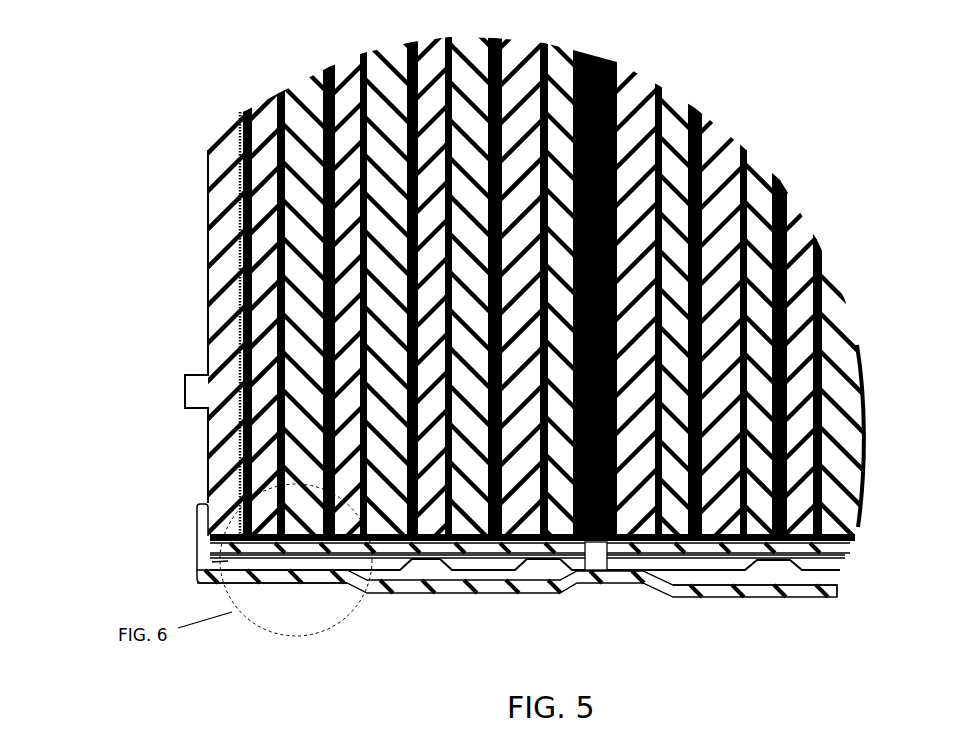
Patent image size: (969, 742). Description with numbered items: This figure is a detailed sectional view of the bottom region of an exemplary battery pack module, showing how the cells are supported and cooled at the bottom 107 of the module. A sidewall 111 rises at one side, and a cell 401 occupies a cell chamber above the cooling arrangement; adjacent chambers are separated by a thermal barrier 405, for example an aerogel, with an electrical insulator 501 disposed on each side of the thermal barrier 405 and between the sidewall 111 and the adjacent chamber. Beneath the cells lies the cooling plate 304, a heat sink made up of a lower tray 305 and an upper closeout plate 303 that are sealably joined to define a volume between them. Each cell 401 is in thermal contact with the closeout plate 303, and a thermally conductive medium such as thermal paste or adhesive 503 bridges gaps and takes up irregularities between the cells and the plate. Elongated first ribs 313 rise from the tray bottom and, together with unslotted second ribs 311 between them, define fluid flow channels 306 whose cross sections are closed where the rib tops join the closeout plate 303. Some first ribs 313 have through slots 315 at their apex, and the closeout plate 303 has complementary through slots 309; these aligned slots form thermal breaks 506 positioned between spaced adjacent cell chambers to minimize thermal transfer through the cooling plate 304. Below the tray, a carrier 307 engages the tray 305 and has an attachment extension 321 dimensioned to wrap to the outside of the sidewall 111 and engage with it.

The bottom 107 is at (546, 595).
The sidewalls 111 is at (176, 301).
The closeout plate 303 is at (395, 548).
The cooling plate 304 is at (212, 564).
The lower tray 305 is at (840, 578).
The fluid flow channels 306 is at (493, 563).
The carrier 307 is at (766, 598).
The through slots 309 is at (586, 550).
The second ribs 311 is at (433, 572).
The first ribs 313 is at (635, 562).
The through slots 315 is at (602, 552).
The attachment extensions 321 is at (193, 538).
The cell 401 is at (263, 98).
The thermal barrier 405 is at (600, 53).
The electrical insulator 501 is at (241, 112).
The thermal paste or adhesive 503 is at (856, 538).
The thermal breaks 506 is at (595, 553).